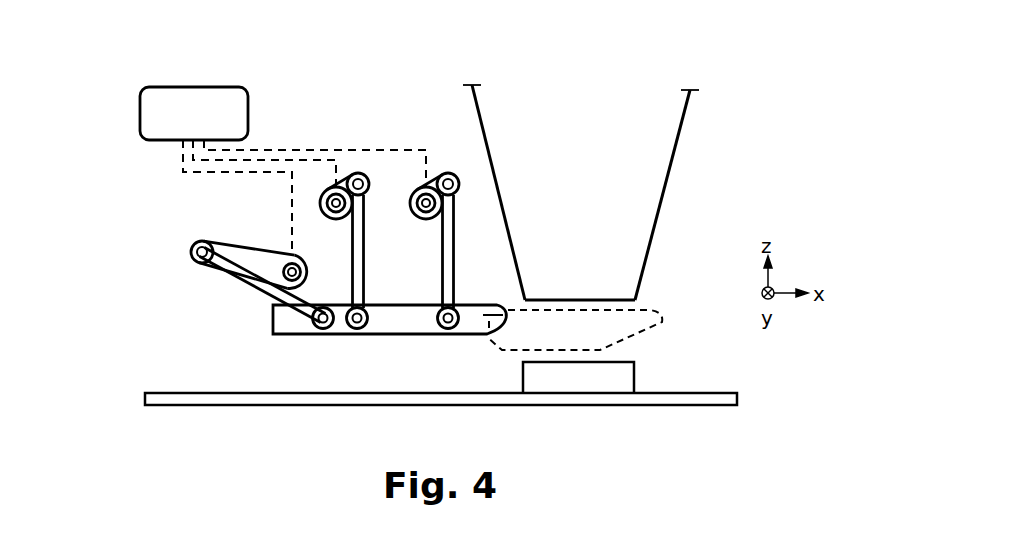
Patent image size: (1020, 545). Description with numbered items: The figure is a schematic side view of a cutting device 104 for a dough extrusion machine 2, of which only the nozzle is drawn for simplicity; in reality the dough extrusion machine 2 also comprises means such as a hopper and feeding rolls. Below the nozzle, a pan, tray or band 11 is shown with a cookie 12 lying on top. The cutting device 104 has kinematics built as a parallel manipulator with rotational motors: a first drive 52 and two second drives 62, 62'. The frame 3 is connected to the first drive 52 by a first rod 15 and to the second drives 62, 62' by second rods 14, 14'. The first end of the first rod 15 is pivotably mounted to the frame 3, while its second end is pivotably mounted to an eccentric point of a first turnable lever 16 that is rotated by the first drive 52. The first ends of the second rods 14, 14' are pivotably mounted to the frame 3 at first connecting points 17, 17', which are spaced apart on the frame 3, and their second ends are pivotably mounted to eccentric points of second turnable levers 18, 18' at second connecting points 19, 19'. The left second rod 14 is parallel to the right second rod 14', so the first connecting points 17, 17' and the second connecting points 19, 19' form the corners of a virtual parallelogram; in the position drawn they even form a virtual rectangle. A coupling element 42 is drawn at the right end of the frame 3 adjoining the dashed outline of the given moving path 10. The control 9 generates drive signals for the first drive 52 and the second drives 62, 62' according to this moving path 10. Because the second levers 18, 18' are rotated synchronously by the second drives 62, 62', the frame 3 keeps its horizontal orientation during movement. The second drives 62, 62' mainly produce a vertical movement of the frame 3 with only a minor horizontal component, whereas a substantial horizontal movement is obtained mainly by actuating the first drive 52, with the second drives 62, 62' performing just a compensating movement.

The dough extrusion machine 2 is at (700, 162).
The frame 3 is at (283, 327).
The control 9 is at (158, 107).
The moving path 10 is at (648, 333).
The band 11 is at (687, 400).
The cookie 12 is at (565, 382).
The second rod 14 is at (388, 251).
The second rod 14' is at (480, 251).
The first rod 15 is at (262, 288).
The first turnable lever 16 is at (253, 262).
The first connecting point 17 is at (424, 343).
The first connecting point 17' is at (330, 343).
The second turnable lever 18 is at (317, 144).
The second turnable lever 18' is at (405, 144).
The second connecting point 19 is at (336, 117).
The second connecting point 19' is at (424, 117).
The coupling element 42 is at (492, 318).
The first drive 52 is at (287, 258).
The second drive 62 is at (294, 142).
The second drive 62' is at (387, 141).
The cutting device 104 is at (130, 207).